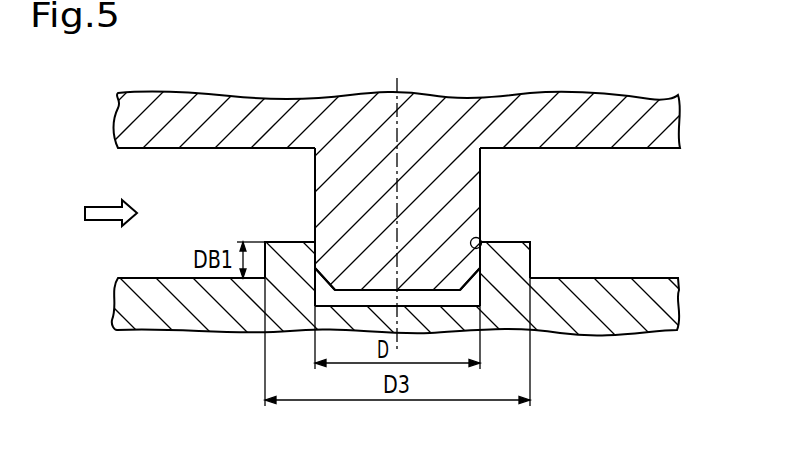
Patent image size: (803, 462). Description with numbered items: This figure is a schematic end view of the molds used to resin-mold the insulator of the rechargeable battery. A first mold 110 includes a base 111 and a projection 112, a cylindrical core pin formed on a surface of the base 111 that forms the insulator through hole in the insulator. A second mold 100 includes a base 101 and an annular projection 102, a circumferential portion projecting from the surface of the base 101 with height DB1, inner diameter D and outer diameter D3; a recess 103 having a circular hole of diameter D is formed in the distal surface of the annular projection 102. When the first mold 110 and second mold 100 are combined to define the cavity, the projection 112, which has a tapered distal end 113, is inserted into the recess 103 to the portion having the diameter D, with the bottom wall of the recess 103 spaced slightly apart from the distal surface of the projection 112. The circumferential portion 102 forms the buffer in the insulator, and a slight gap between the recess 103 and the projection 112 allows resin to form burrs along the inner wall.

The second mold 100 is at (660, 278).
The base 101 is at (622, 277).
The annular projection 102 is at (531, 263).
The recess 103 is at (482, 241).
The first mold 110 is at (668, 149).
The base 111 is at (594, 149).
The projection 112 is at (482, 184).
The tapered distal end 113 is at (421, 294).